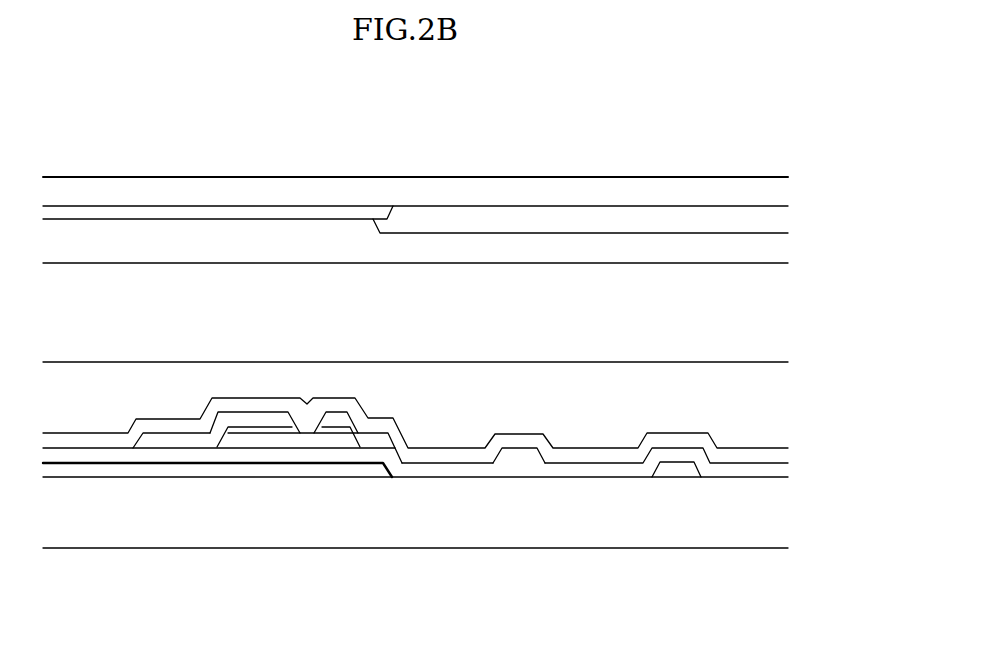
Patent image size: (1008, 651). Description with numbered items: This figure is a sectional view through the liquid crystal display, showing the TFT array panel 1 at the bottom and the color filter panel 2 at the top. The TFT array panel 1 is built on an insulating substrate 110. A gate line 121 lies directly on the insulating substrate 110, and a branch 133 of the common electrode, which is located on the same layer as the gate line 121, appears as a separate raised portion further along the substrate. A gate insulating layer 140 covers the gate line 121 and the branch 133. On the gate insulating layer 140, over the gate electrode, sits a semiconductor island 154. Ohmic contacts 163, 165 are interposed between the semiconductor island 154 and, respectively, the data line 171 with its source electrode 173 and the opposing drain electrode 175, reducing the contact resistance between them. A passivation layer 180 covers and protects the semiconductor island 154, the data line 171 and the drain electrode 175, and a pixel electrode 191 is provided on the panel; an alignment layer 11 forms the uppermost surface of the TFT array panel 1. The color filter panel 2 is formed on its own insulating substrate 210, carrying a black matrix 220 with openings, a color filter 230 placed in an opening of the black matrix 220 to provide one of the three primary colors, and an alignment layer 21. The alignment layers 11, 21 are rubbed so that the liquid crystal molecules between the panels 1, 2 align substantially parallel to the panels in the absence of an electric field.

The TFT array panel 1 is at (443, 453).
The color filter panel 2 is at (441, 217).
The alignment layer 11 is at (72, 373).
The alignment layer 21 is at (513, 250).
The insulating substrate 110 is at (388, 532).
The gate line 121 is at (108, 470).
The branch 133 is at (675, 468).
The gate insulating layer 140 is at (443, 465).
The semiconductor island 154 is at (305, 440).
The ohmic contact 163 is at (266, 424).
The ohmic contact 165 is at (345, 432).
The data line 171 is at (153, 442).
The source electrode 173 is at (243, 420).
The drain electrode 175 is at (337, 423).
The passivation layer 180 is at (596, 457).
The pixel electrode 191 is at (517, 455).
The insulating substrate 210 is at (573, 193).
The black matrix 220 is at (233, 213).
The color filter 230 is at (665, 212).